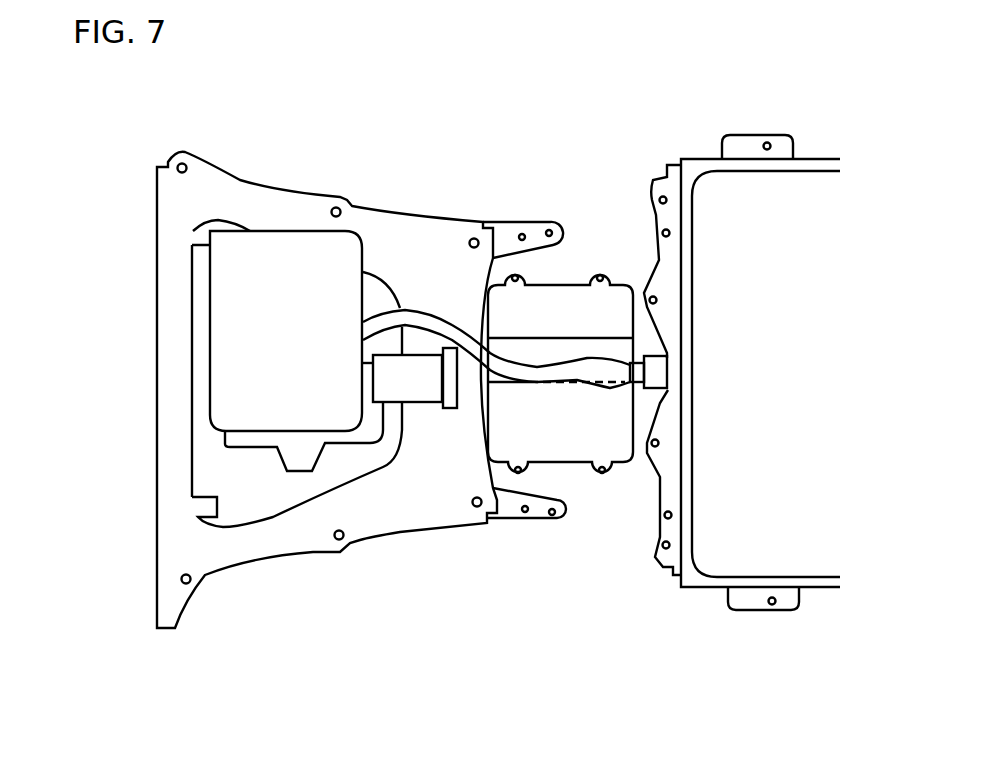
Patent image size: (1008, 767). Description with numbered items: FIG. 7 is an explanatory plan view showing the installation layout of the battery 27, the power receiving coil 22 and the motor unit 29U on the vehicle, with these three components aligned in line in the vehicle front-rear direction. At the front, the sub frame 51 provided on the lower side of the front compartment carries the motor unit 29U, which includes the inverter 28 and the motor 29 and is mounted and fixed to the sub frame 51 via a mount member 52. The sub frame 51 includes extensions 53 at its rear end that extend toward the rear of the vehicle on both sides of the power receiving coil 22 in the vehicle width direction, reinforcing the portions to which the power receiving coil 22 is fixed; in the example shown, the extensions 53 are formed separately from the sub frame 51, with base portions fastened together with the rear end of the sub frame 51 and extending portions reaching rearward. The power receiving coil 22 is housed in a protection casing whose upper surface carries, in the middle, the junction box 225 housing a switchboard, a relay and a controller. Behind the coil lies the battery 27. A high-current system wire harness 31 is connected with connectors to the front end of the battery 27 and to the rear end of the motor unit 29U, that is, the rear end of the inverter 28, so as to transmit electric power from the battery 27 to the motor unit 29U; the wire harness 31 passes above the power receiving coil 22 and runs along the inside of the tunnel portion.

The power receiving coil 22 is at (560, 412).
The junction box 225 is at (568, 337).
The battery 27 is at (702, 588).
The inverter 28 is at (192, 376).
The motor 29 is at (218, 447).
The motor unit 29U is at (120, 382).
The wire harness 31 is at (390, 308).
The sub frame 51 is at (257, 183).
The mount member 52 is at (398, 390).
The extensions 53 is at (518, 222).